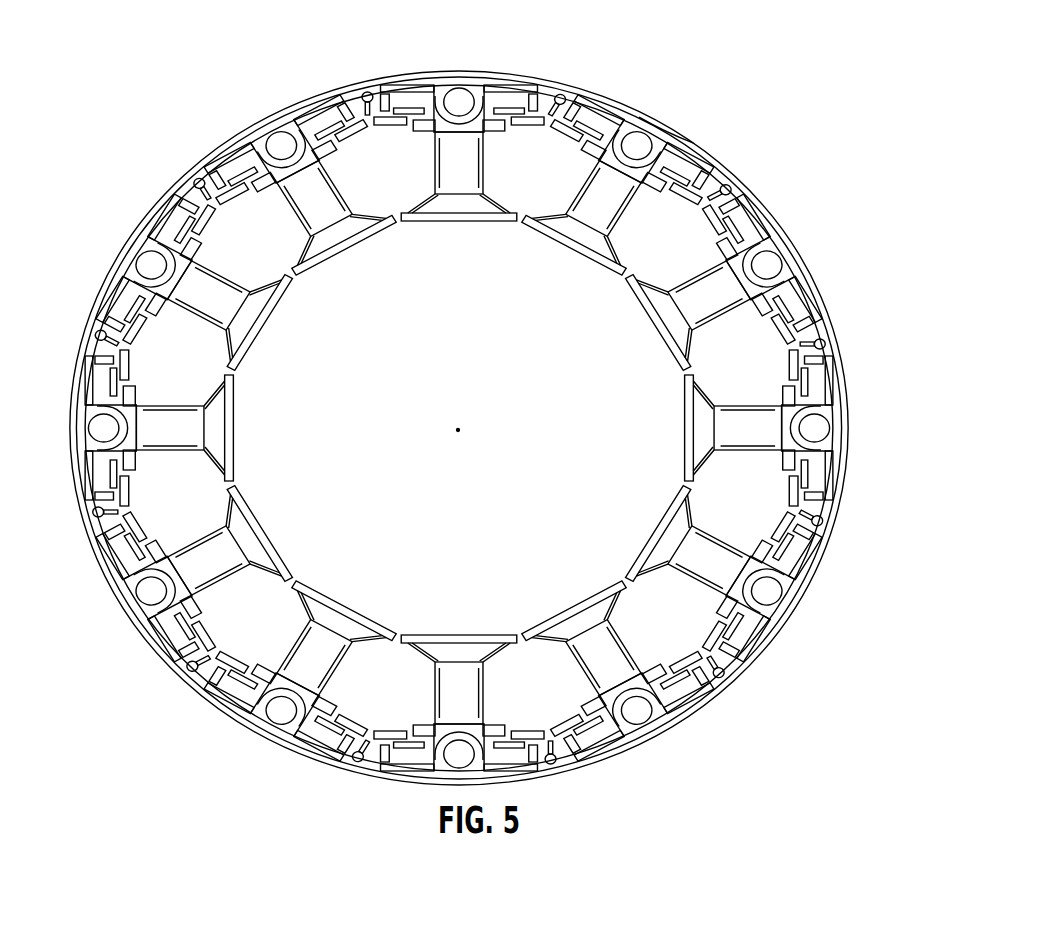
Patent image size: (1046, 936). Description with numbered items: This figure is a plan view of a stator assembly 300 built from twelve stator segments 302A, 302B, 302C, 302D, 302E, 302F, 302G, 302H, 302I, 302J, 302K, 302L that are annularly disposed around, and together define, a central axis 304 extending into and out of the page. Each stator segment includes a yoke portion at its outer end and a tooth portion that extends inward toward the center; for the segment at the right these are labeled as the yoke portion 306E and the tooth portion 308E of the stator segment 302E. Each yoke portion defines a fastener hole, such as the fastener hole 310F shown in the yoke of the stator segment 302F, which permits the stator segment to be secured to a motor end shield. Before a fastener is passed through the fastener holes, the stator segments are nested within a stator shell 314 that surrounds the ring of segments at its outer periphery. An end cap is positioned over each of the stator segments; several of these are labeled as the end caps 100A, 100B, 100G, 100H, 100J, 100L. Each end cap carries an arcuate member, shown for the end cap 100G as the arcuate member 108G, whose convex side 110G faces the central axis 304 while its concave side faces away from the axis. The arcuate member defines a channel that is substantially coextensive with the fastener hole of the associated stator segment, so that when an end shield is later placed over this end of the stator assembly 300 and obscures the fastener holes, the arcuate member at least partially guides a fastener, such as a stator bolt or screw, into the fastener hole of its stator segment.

The stator assembly 300 is at (795, 668).
The stator shell 314 is at (377, 777).
The central axis 304 is at (458, 430).
The stator segment 302A is at (384, 607).
The stator segment 302B is at (462, 633).
The stator segment 302C is at (549, 607).
The stator segment 302D is at (643, 551).
The stator segment 302E is at (690, 428).
The stator segment 302F is at (662, 328).
The stator segment 302G is at (550, 242).
The stator segment 302H is at (462, 220).
The stator segment 302I is at (356, 246).
The stator segment 302J is at (263, 327).
The stator segment 302K is at (233, 417).
The stator segment 302L is at (270, 543).
The tooth portion 308E is at (747, 423).
The yoke portion 306E is at (833, 413).
The fastener hole 310F is at (764, 262).
The arcuate member 108G is at (671, 131).
The convex side 110G is at (651, 162).
The end cap 100A is at (322, 730).
The end cap 100B is at (523, 750).
The end cap 100G is at (653, 120).
The end cap 100H is at (413, 97).
The end cap 100J is at (125, 303).
The end cap 100L is at (127, 555).